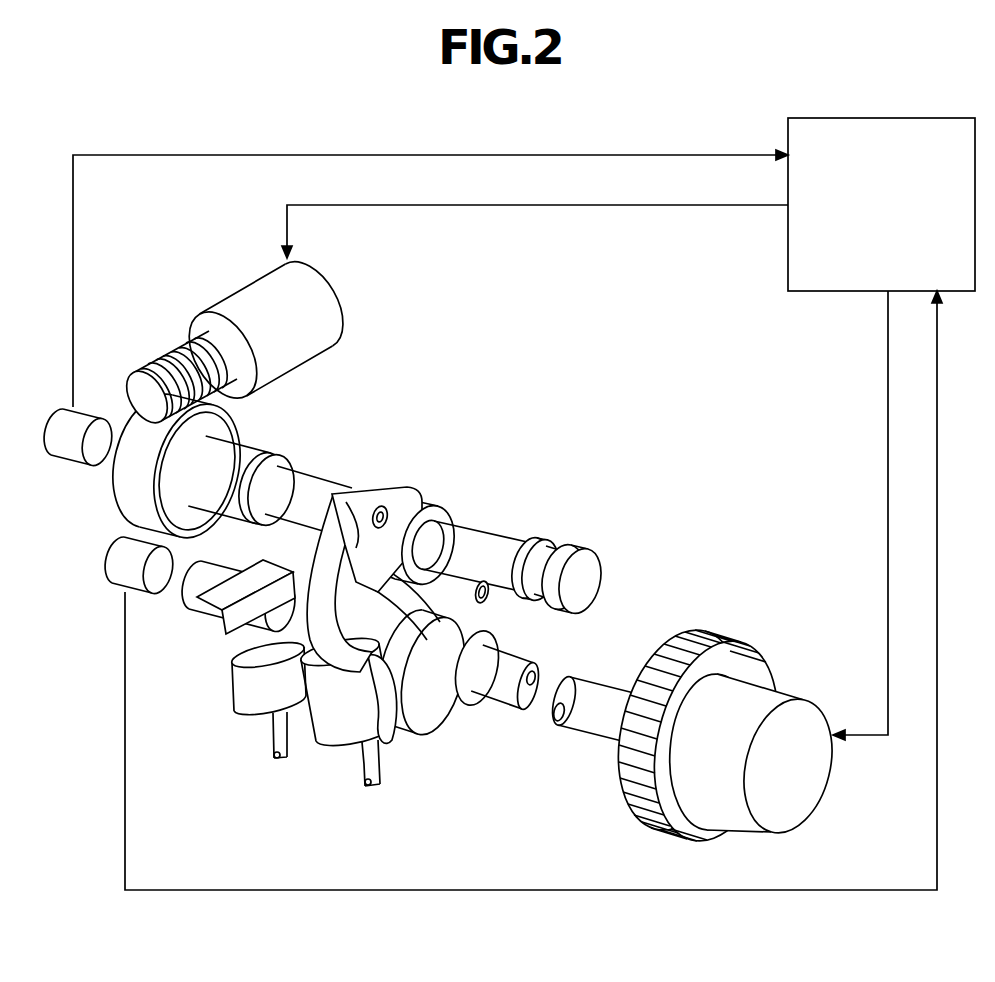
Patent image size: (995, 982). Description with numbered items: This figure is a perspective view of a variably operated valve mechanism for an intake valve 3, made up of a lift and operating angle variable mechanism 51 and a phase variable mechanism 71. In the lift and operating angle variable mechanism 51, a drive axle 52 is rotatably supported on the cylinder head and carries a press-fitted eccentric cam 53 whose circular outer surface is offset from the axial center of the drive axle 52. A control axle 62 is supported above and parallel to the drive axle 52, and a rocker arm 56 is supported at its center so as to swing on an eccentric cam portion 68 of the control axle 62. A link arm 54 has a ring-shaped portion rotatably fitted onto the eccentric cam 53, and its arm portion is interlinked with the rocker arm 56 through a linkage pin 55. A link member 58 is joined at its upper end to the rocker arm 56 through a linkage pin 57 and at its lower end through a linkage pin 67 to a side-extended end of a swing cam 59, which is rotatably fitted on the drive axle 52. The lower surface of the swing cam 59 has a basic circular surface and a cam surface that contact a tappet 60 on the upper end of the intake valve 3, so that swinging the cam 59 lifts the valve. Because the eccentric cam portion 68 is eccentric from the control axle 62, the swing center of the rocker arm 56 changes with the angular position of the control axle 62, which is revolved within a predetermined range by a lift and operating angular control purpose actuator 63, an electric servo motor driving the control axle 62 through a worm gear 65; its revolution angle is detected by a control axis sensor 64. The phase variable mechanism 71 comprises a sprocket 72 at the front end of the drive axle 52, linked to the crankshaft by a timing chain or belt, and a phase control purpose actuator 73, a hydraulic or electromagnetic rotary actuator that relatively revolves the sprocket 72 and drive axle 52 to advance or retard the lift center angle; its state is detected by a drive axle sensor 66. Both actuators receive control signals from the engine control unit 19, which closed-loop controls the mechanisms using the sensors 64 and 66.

The intake valve 3 is at (360, 779).
The engine control unit 19 is at (788, 250).
The lift and operating angle variable mechanism 51 is at (424, 472).
The drive axle 52 is at (498, 697).
The eccentric cam 53 is at (425, 713).
The link arm 54 is at (395, 727).
The linkage pin 55 is at (488, 602).
The rocker arm 56 is at (420, 504).
The linkage pin 57 is at (381, 506).
The link member 58 is at (316, 676).
The swing cam 59 is at (290, 663).
The tappet 60 is at (352, 727).
The control axle 62 is at (290, 487).
The lift and operating angular control purpose actuator 63 is at (305, 322).
The control axis sensor 64 is at (62, 446).
The worm gear 65 is at (183, 340).
The drive axle sensor 66 is at (125, 565).
The linkage pin 67 is at (377, 725).
The eccentric cam portion 68 is at (427, 568).
The phase variable mechanism 71 is at (740, 613).
The sprocket 72 is at (650, 806).
The phase control purpose actuator 73 is at (793, 785).